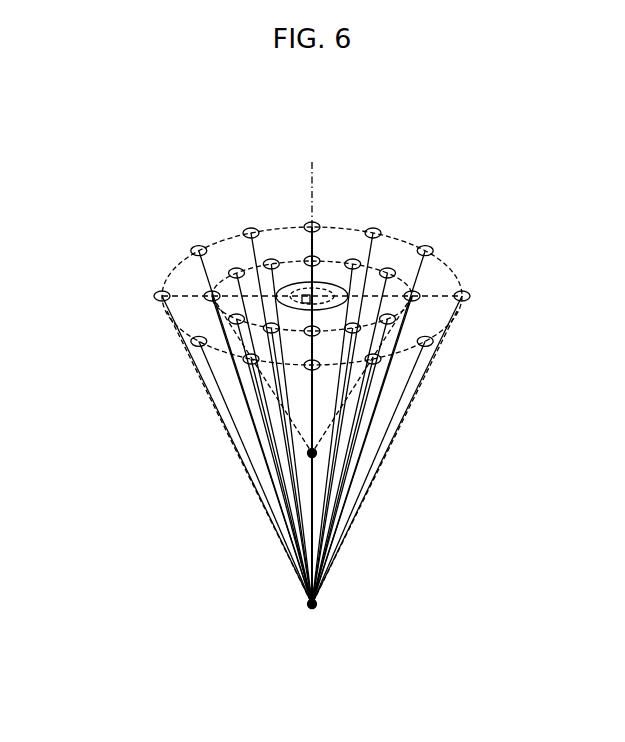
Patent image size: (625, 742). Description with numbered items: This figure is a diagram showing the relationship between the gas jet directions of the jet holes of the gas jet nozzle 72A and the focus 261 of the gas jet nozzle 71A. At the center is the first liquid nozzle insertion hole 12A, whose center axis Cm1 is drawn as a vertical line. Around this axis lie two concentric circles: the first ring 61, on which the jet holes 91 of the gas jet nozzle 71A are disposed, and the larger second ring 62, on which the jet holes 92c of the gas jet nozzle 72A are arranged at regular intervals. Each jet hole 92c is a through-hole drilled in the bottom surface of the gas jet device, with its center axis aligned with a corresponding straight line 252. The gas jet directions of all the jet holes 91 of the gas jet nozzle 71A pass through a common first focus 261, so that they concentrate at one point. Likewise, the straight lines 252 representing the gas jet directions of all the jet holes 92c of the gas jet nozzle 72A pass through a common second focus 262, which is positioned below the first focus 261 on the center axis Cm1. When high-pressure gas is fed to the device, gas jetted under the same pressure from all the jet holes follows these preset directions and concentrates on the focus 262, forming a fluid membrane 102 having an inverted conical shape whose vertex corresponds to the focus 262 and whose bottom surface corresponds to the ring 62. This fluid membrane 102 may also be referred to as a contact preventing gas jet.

The center axis Cm1 is at (322, 183).
The fluid membrane 102 is at (434, 430).
The gas jet nozzle 72A is at (183, 245).
The gas jet nozzle 71A is at (202, 298).
The second ring 62 is at (413, 245).
The first ring 61 is at (406, 280).
The straight line 252 is at (253, 258).
The point marker 92c is at (251, 228).
The jet hole 91 is at (272, 259).
The first liquid nozzle insertion hole 12A is at (332, 282).
The first focus 261 is at (315, 455).
The second focus 262 is at (314, 606).